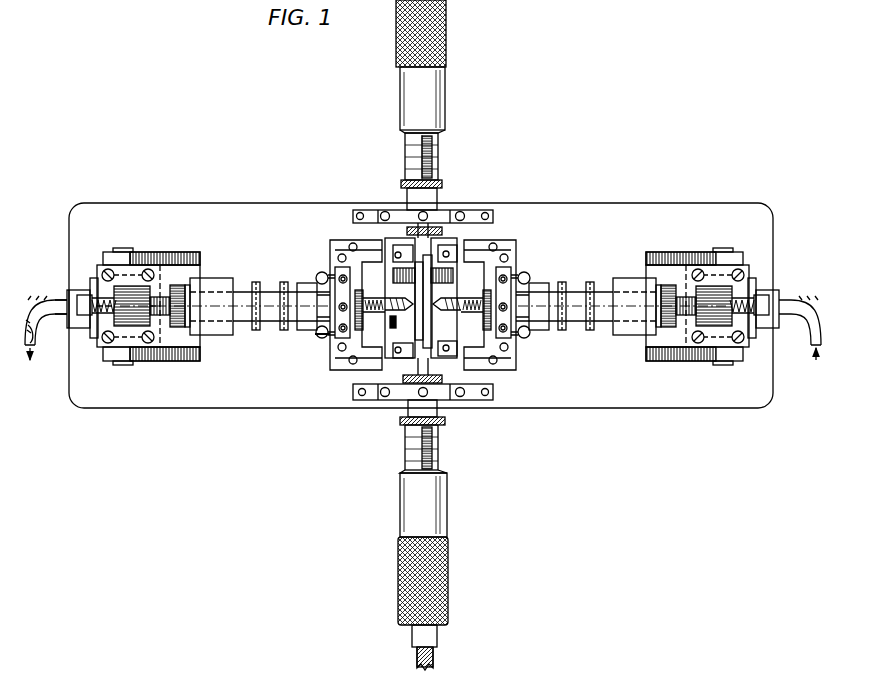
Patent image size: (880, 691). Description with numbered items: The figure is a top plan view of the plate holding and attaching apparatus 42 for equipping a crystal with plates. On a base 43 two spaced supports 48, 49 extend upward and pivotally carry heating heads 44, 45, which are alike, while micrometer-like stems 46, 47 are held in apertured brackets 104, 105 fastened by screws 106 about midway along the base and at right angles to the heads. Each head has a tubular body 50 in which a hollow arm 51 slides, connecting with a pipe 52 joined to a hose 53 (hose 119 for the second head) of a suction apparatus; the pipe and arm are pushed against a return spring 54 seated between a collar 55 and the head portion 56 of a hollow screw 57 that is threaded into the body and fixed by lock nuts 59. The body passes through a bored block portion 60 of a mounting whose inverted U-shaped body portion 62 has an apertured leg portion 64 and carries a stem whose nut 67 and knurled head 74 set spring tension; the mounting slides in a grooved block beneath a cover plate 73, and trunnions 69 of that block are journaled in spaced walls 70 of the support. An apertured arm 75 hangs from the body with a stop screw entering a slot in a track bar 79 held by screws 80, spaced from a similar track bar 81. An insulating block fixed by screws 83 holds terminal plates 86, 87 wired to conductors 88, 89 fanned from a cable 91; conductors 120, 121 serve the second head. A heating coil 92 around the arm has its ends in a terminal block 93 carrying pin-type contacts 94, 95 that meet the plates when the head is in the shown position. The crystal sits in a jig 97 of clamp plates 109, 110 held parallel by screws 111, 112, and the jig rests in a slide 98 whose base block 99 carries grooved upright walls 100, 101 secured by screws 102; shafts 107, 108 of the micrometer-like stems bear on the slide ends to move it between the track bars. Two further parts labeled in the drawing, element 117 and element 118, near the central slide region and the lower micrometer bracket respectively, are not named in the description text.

The plate holding and attaching apparatus 42 is at (498, 211).
The base 43 is at (608, 203).
The heating head 44 is at (245, 290).
The heating head 45 is at (563, 288).
The micrometer-like stem 46 is at (448, 84).
The micrometer-like stem 47 is at (449, 506).
The support 48 is at (165, 265).
The support 49 is at (672, 252).
The tubular body 50 is at (242, 322).
The hollow arm 51 is at (396, 360).
The pipe 52 is at (70, 300).
The hose 53 is at (38, 328).
The return spring 54 is at (98, 318).
The collar 55 is at (82, 295).
The head portion 56 is at (130, 318).
The hollow screw 57 is at (172, 328).
The lock nuts 59 is at (186, 286).
The bored block portion 60 is at (220, 279).
The inverted U-shaped body portion 62 is at (94, 290).
The leg portion 64 is at (69, 300).
The nut 67 is at (256, 282).
The trunnions 69 is at (123, 248).
The spaced walls 70 is at (188, 262).
The cover plate 73 is at (133, 270).
The knurled head 74 is at (150, 272).
The apertured arm 75 is at (303, 331).
The track bar 79 is at (338, 240).
The screws 80 is at (353, 243).
The track bar 81 is at (500, 366).
The screws 83 is at (338, 256).
The terminal plate 86 is at (316, 279).
The terminal plate 87 is at (318, 337).
The wire 88 is at (339, 277).
The wire 89 is at (318, 338).
The cable 91 is at (40, 300).
The heating coil 92 is at (400, 312).
The terminal block 93 is at (276, 322).
The pin-type contact 94 is at (336, 268).
The pin-type contact 95 is at (341, 333).
The jig 97 is at (445, 285).
The slide 98 is at (445, 245).
The base block 99 is at (470, 300).
The upright wall 100 is at (510, 266).
The upright wall 101 is at (452, 356).
The screws 102 is at (385, 212).
The bracket 104 is at (362, 210).
The bracket 105 is at (486, 401).
The screws 106 is at (486, 212).
The shaft 107 is at (432, 200).
The shaft 108 is at (400, 424).
The clamp plate 109 is at (412, 227).
The clamp plate 110 is at (430, 312).
The screws 111 is at (395, 268).
The screws 112 is at (392, 322).
The blade holder 117 is at (440, 262).
The bar hole 118 is at (448, 401).
The hose 119 is at (795, 318).
The conductor 120 is at (530, 276).
The conductor 121 is at (528, 336).